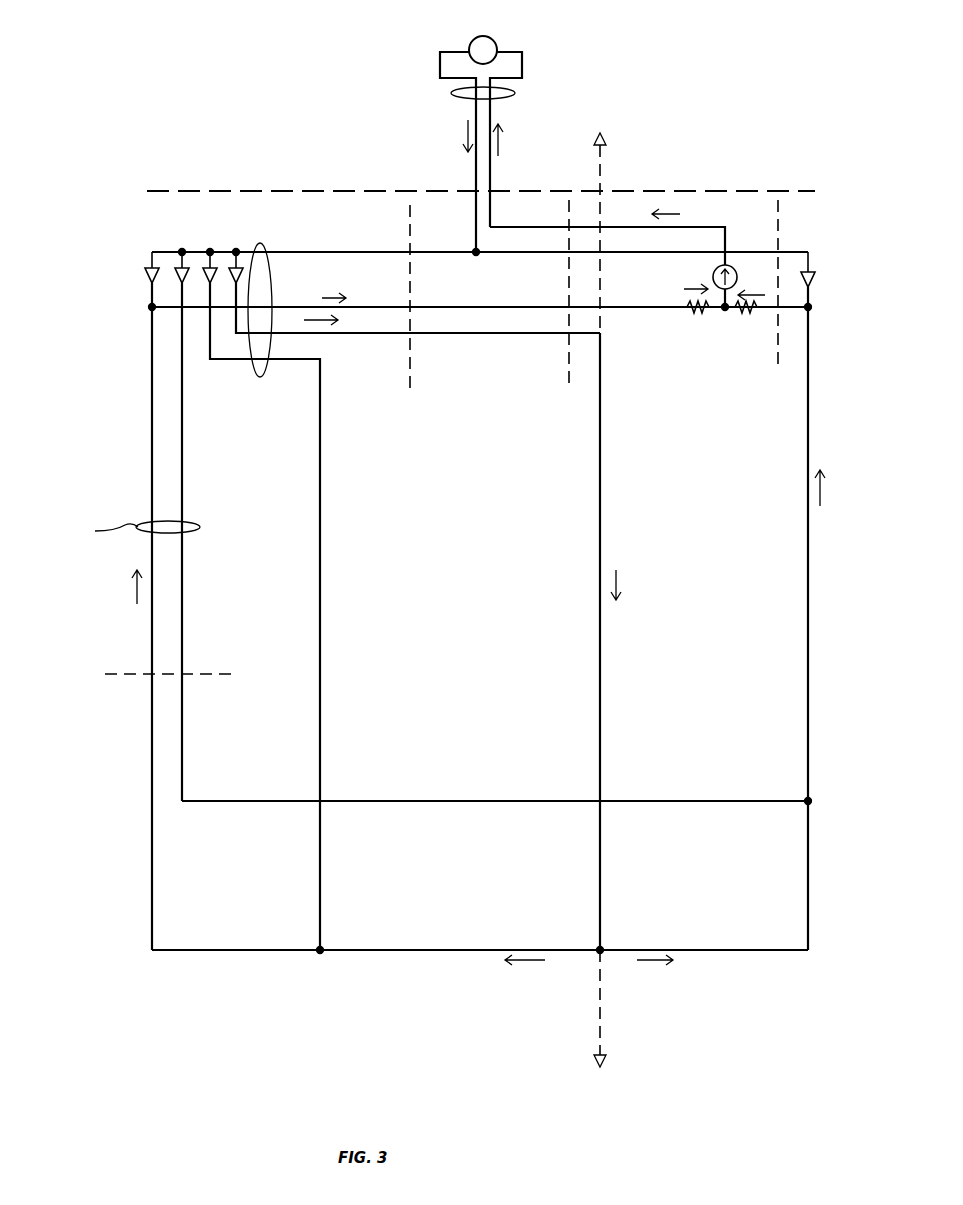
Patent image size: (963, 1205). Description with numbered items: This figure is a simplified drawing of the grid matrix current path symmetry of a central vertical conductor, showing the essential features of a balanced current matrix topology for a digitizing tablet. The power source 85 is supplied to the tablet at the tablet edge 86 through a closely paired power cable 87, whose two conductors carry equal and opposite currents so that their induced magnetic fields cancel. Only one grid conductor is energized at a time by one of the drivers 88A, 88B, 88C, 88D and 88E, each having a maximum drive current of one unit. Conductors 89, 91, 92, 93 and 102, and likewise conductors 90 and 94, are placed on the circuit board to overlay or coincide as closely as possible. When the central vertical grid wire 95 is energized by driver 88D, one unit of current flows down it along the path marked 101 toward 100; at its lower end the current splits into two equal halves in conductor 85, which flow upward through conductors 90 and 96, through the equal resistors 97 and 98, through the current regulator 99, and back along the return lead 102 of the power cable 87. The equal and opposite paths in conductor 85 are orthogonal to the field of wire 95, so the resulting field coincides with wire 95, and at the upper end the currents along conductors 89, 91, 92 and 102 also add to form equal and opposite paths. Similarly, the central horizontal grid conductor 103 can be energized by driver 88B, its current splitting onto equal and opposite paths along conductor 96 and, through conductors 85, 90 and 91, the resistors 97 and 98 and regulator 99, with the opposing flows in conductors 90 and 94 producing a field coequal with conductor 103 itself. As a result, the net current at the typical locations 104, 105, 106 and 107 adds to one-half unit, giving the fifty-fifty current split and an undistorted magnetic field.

The power source 85 is at (490, 40).
The tablet edge 86 is at (313, 190).
The power cable 87 is at (515, 93).
The driver 88A is at (145, 276).
The driver 88B is at (173, 250).
The driver 88C is at (203, 246).
The driver 88D is at (232, 246).
The driver 88E is at (814, 282).
The overlay conductor 89 is at (252, 244).
The conductor 90 is at (150, 448).
The conductor 91 is at (355, 301).
The conductor 92 is at (356, 337).
The conductor 93 is at (309, 366).
The conductor 94 is at (184, 450).
The central vertical grid wire 95 is at (601, 651).
The conductor 96 is at (809, 576).
The resistor 97 is at (696, 316).
The resistor 98 is at (748, 316).
The current regulator 99 is at (662, 258).
The current path 100 is at (601, 1033).
The current path 101 is at (601, 165).
The return lead 102 is at (540, 229).
The central horizontal grid conductor 103 is at (420, 800).
The typical location 104 is at (411, 372).
The typical location 105 is at (568, 366).
The typical location 106 is at (776, 346).
The typical location 107 is at (205, 673).